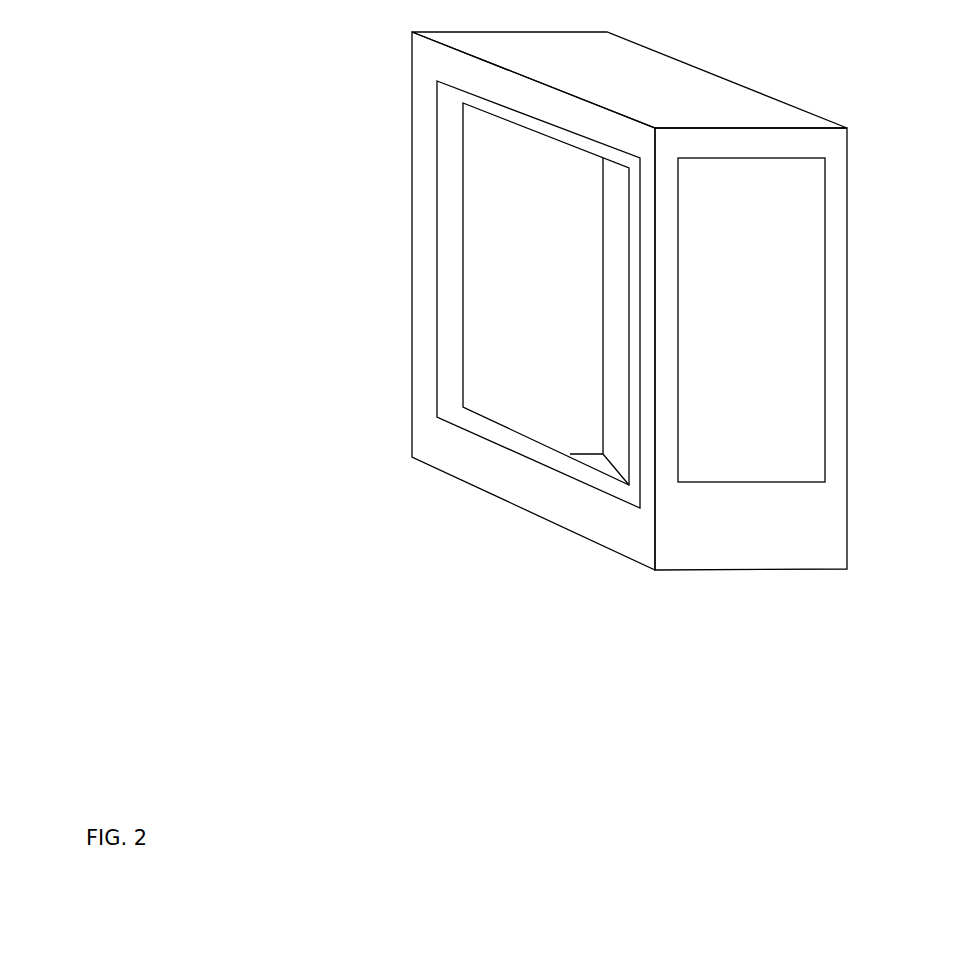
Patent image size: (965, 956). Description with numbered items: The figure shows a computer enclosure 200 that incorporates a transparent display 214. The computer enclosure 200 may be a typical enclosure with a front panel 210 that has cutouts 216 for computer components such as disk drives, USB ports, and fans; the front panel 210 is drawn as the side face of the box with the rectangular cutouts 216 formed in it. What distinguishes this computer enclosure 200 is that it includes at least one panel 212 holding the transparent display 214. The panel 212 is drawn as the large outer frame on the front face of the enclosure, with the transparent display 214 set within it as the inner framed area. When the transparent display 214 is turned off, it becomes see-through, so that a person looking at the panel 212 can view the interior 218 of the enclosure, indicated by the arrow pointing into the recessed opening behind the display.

The computer enclosure 200 is at (403, 561).
The front panel 210 is at (827, 532).
The panel 212 is at (452, 403).
The transparent display 214 is at (482, 248).
The cutouts 216 is at (812, 292).
The interior 218 is at (479, 165).